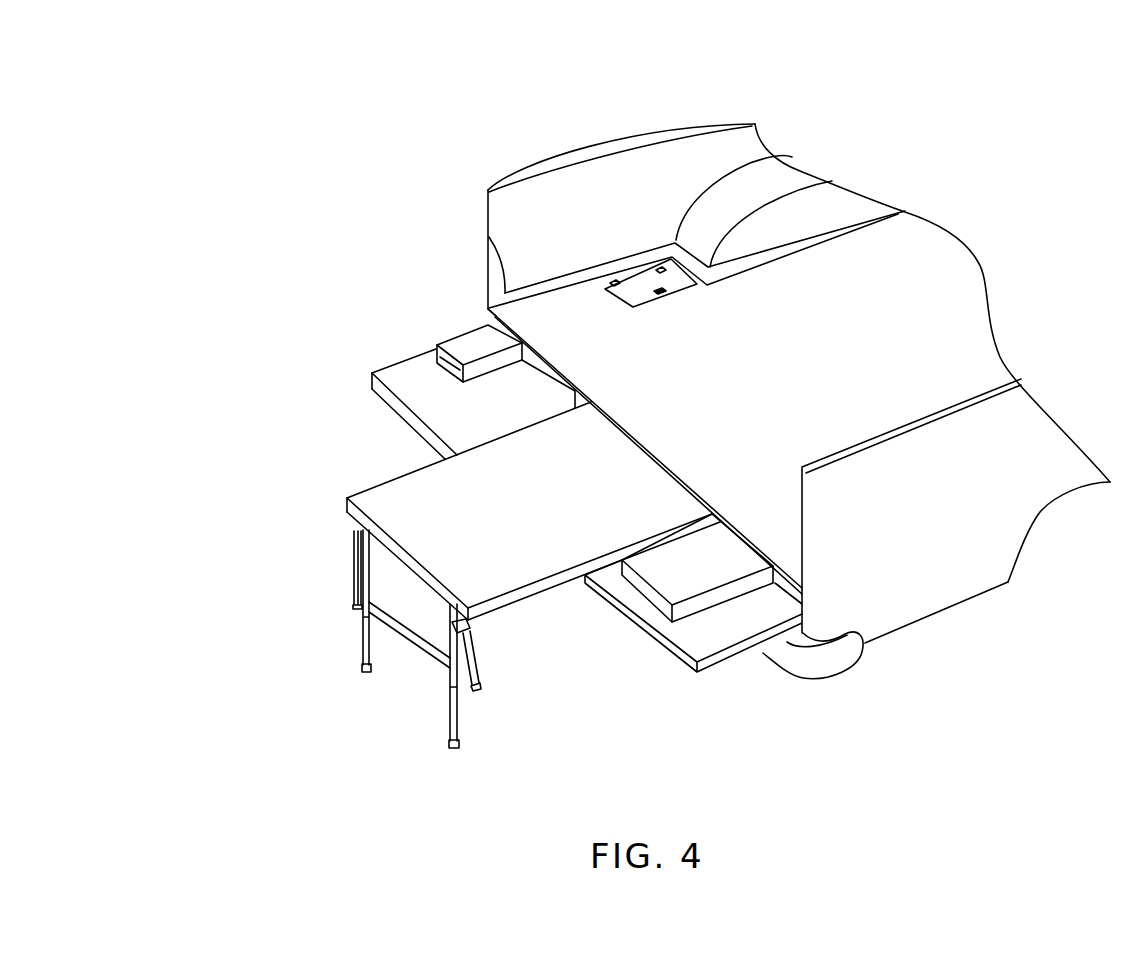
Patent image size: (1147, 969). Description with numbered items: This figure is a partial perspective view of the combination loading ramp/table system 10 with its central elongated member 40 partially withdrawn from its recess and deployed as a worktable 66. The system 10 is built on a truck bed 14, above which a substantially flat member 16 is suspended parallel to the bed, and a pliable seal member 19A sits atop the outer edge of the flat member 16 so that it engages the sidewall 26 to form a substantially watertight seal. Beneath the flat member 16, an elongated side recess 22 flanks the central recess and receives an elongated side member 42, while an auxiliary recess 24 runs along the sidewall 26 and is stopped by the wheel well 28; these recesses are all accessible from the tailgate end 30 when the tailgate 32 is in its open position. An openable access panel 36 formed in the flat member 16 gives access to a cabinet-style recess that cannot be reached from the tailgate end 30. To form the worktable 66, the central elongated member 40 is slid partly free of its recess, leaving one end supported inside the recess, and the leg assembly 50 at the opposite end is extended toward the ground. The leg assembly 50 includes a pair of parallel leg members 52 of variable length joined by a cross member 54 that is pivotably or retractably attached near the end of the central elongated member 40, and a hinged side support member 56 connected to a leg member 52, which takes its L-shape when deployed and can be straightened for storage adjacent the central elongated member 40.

The combination loading ramp/table system 10 is at (130, 442).
The truck bed 14 is at (478, 320).
The substantially flat member 16 is at (938, 313).
The seal member 19A is at (486, 312).
The elongated side recess 22 is at (541, 382).
The auxiliary recess 24 is at (785, 594).
The sidewall 26 is at (947, 583).
The wheel well 28 is at (755, 188).
The tailgate end 30 is at (770, 688).
The tailgate 32 is at (452, 417).
The access panel 36 is at (641, 277).
The central elongated member 40 is at (402, 504).
The elongated side member 42 is at (668, 575).
The leg assembly 50 is at (398, 647).
The leg member 52 is at (376, 643).
The cross member 54 is at (398, 620).
The side support member 56 is at (474, 658).
The worktable 66 is at (324, 464).